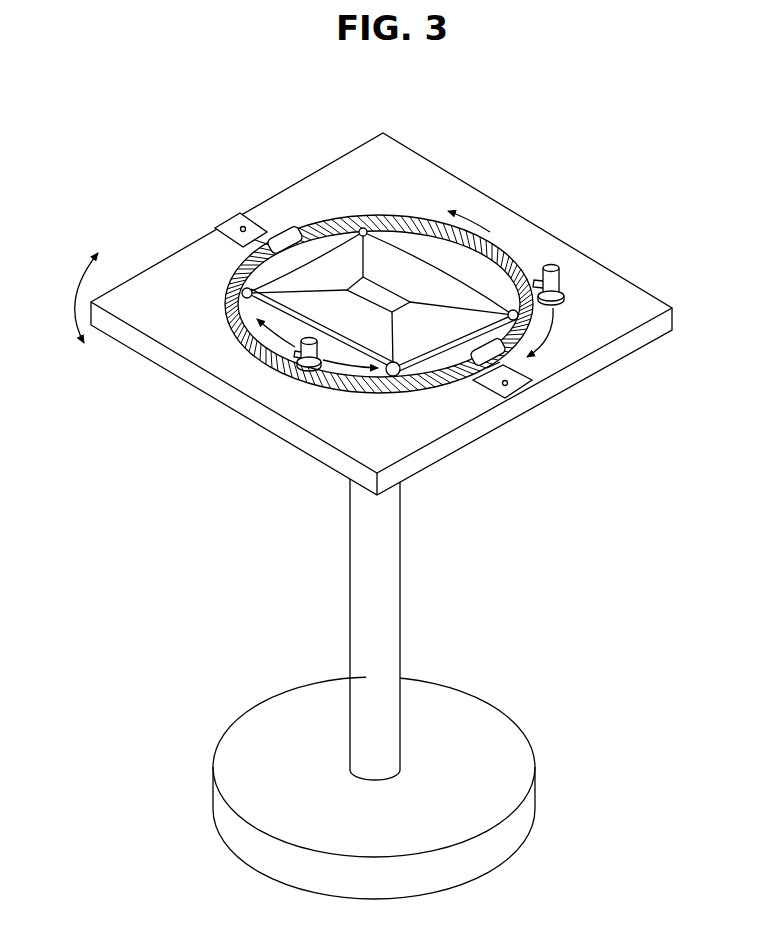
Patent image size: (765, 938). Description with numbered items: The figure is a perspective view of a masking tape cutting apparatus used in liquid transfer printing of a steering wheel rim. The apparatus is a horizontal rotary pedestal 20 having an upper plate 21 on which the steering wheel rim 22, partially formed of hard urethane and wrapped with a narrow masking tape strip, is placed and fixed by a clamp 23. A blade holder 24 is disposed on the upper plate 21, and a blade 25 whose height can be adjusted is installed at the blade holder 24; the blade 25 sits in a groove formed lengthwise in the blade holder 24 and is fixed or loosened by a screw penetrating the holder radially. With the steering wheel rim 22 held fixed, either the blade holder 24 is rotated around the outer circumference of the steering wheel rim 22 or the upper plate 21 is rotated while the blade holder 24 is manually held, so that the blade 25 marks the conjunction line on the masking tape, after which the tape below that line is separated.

The horizontal rotary pedestal 20 is at (143, 242).
The upper plate 21 is at (477, 188).
The steering wheel rim 22 is at (405, 217).
The clamp 23 is at (232, 225).
The blade holder 24 is at (561, 282).
The blade 25 is at (536, 274).